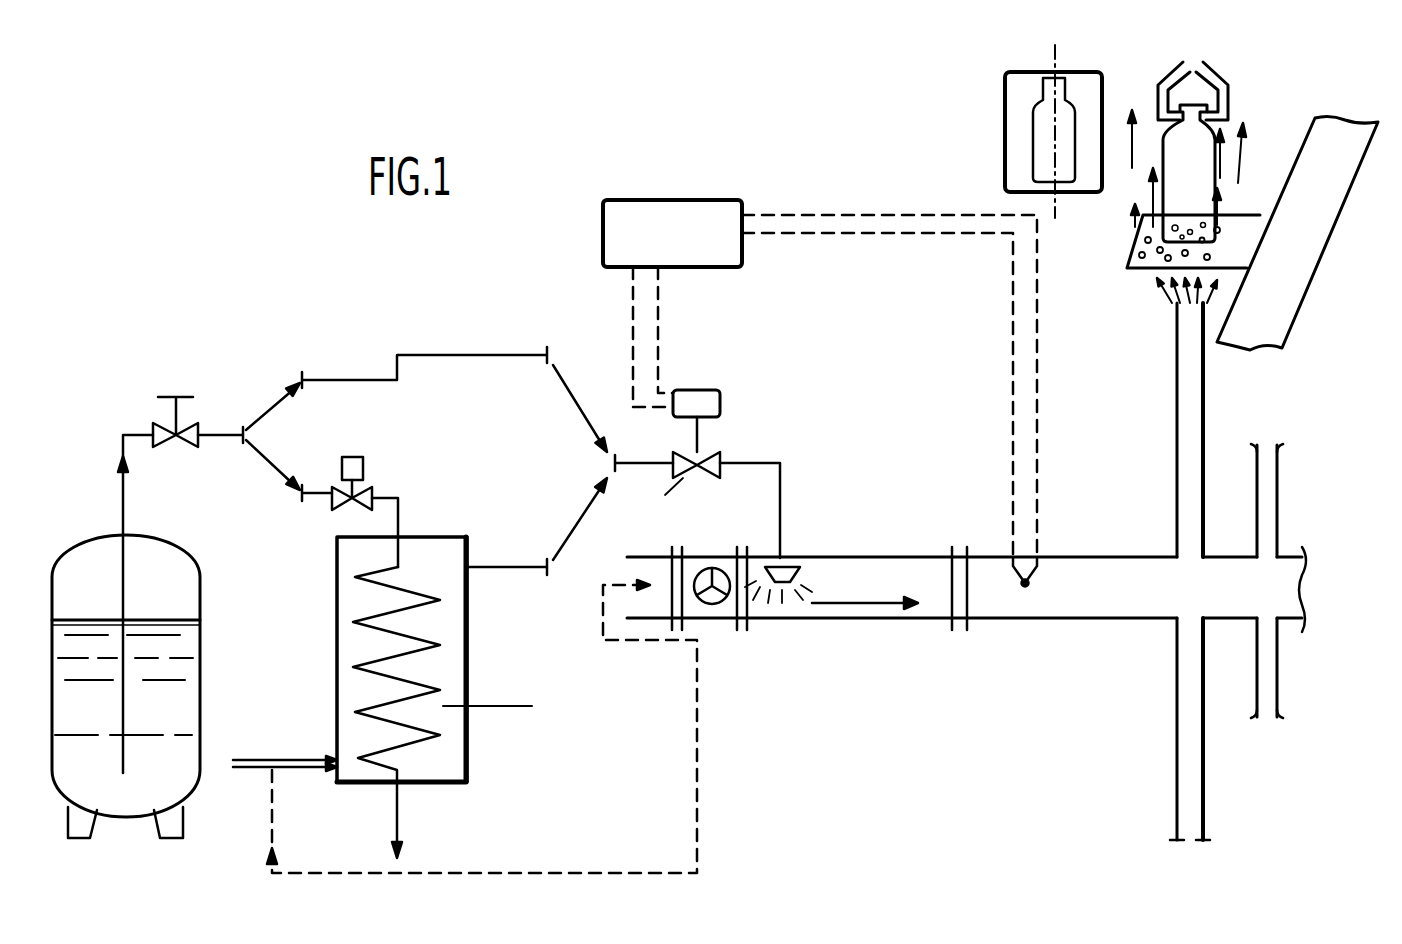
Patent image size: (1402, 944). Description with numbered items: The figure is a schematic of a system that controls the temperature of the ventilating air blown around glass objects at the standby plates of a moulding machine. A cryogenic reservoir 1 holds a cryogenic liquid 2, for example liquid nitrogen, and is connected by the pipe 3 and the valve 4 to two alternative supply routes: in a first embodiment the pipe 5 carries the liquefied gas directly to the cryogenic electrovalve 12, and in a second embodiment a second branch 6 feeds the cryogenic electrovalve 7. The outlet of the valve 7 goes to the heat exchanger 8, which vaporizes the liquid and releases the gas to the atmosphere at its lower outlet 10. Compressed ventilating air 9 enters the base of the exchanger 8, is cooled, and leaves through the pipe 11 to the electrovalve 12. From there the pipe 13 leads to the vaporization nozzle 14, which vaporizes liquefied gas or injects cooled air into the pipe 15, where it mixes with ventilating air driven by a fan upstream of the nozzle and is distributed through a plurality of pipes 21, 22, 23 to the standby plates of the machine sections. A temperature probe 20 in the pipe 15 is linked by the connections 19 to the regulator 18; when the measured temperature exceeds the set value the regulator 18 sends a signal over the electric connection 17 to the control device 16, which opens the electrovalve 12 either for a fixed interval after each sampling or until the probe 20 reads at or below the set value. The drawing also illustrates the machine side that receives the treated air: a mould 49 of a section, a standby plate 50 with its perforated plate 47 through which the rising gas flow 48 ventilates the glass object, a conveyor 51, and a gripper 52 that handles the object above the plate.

The cryogenic reservoir 1 is at (198, 728).
The cryogenic liquid 2 is at (178, 655).
The pipe 3 is at (125, 512).
The valve 4 is at (196, 418).
The pipe 5 is at (423, 355).
The liquid nitrogen branch line 6 is at (324, 490).
The cryogenic electrovalve 7 is at (369, 487).
The heat exchanger 8 is at (416, 537).
The ventilating air 9 is at (296, 772).
The gaseous nitrogen outlet 10 is at (400, 797).
The pipe 11 is at (528, 567).
The cryogenic electrovalve 12 is at (672, 452).
The pipe 13 is at (733, 460).
The vaporization nozzle 14 is at (790, 565).
The pipe 15 is at (867, 616).
The control device 16 is at (723, 400).
The electric connection 17 is at (636, 303).
The regulator 18 is at (694, 200).
The connections 19 is at (818, 230).
The temperature probe 20 is at (1025, 587).
The pipe 21 is at (1187, 468).
The pipe 22 is at (1268, 497).
The pipe 23 is at (1268, 678).
The perforated plate 47 is at (1140, 253).
The cooling gas flow 48 is at (1203, 134).
The mould 49 is at (1105, 100).
The standby plate 50 is at (1153, 262).
The conveyor 51 is at (1292, 284).
The gripper 52 is at (1215, 97).